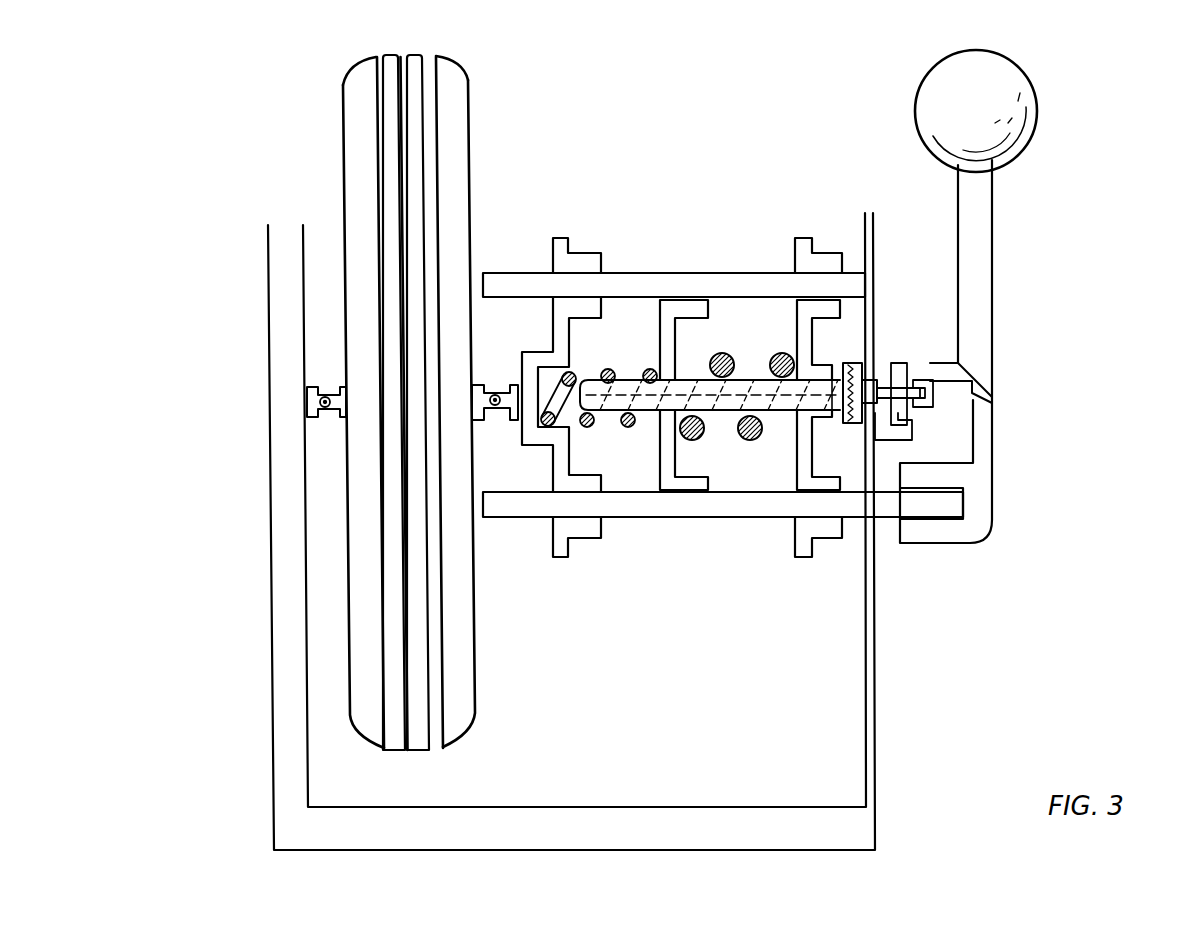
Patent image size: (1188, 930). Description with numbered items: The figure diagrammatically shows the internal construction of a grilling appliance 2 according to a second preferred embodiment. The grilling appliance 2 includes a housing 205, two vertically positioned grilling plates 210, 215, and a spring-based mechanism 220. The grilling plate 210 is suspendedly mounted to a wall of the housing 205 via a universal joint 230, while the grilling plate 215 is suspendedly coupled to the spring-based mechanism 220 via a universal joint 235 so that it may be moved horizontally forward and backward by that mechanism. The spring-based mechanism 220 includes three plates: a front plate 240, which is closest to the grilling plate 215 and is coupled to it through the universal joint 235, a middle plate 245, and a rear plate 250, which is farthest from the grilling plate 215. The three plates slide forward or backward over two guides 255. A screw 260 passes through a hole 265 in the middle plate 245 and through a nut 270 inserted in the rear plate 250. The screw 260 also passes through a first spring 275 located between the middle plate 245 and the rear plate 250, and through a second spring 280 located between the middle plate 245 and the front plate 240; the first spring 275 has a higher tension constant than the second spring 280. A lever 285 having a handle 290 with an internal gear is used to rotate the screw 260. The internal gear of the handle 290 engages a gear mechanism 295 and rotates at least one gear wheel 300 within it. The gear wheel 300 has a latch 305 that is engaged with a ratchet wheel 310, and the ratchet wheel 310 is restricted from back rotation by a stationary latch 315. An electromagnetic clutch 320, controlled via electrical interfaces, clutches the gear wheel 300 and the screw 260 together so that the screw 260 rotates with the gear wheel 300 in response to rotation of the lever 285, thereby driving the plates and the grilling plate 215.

The grilling appliance 2 is at (972, 643).
The housing 205 is at (730, 851).
The grilling plate 210 is at (407, 402).
The grilling plate 215 is at (468, 112).
The spring-based mechanism 220 is at (738, 203).
The universal joint 230 is at (322, 397).
The universal joint 235 is at (495, 395).
The front plate 240 is at (560, 488).
The middle plate 245 is at (688, 494).
The rear plate 250 is at (820, 482).
The guides 255 is at (512, 272).
The screw 260 is at (650, 404).
The hole 265 is at (680, 375).
The nut 270 is at (833, 377).
The first spring 275 is at (745, 443).
The second spring 280 is at (623, 356).
The lever 285 is at (993, 337).
The handle 290 is at (1030, 130).
The gear mechanism 295 is at (942, 413).
The gear wheel 300 is at (923, 382).
The latch 305 is at (912, 363).
The ratchet wheel 310 is at (895, 363).
The stationary latch 315 is at (912, 430).
The electromagnetic clutch 320 is at (857, 428).